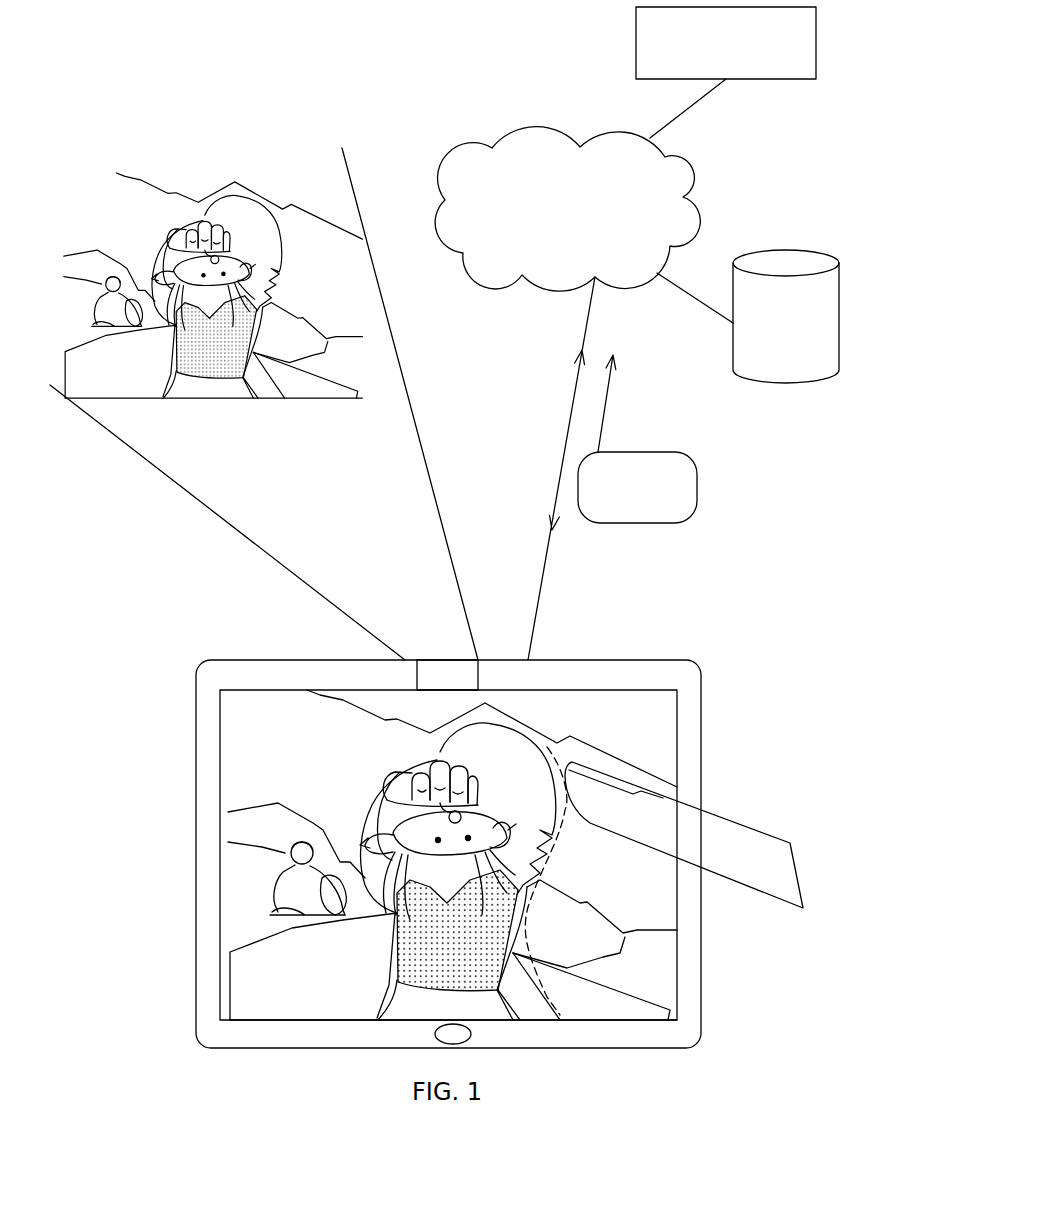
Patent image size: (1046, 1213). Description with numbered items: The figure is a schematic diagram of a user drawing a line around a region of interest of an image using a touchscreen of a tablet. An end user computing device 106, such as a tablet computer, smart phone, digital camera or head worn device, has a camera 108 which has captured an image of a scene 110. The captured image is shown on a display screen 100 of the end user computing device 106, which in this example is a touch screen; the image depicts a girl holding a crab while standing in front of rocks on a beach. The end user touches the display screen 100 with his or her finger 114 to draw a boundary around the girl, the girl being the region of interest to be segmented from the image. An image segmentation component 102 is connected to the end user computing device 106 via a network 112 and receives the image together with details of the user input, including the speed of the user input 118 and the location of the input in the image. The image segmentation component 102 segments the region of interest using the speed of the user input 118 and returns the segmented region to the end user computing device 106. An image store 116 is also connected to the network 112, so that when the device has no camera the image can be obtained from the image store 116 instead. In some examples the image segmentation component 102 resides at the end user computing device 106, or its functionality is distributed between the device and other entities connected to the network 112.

The display screen 100 is at (516, 824).
The image segmentation component 102 is at (797, 65).
The end user computing device 106 is at (738, 680).
The camera 108 is at (458, 673).
The scene 110 is at (281, 198).
The network 112 is at (583, 233).
The finger 114 is at (710, 845).
The image store 116 is at (800, 355).
The speed of the user input 118 is at (697, 482).